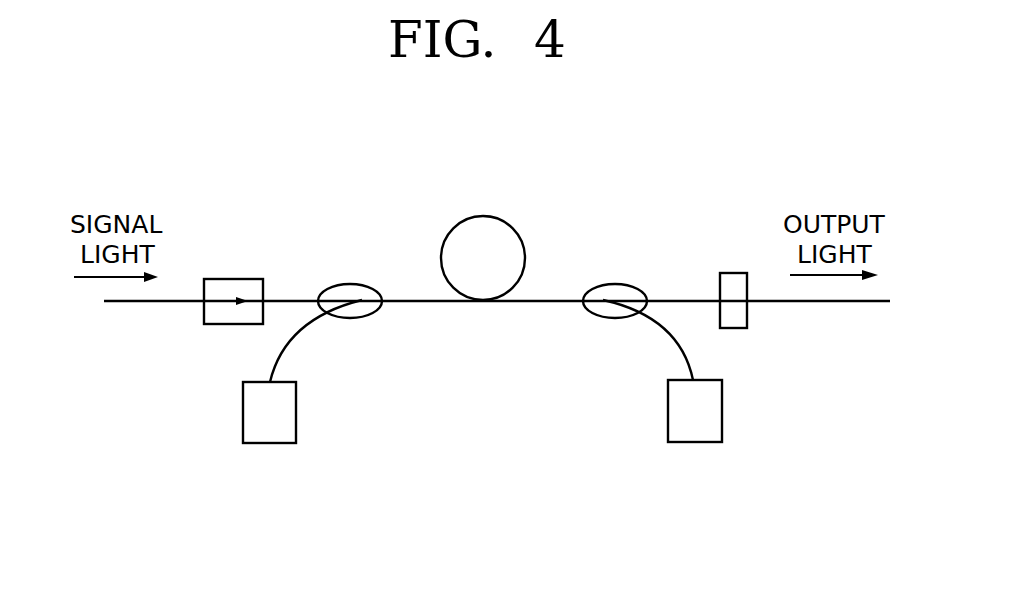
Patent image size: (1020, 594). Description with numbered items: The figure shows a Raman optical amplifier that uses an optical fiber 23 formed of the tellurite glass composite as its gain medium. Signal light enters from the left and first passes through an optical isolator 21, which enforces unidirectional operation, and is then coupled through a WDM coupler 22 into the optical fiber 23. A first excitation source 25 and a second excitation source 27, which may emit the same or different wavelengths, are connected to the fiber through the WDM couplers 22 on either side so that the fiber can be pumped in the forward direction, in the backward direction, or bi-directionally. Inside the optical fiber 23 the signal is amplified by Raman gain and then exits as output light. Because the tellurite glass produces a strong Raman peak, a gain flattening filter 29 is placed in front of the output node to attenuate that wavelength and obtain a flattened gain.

The optical isolator 21 is at (233, 278).
The WDM coupler 22 is at (350, 284).
The optical fiber 23 is at (407, 300).
The first excitation source 25 is at (270, 445).
The second excitation source 27 is at (694, 444).
The gain flattening filter 29 is at (734, 272).